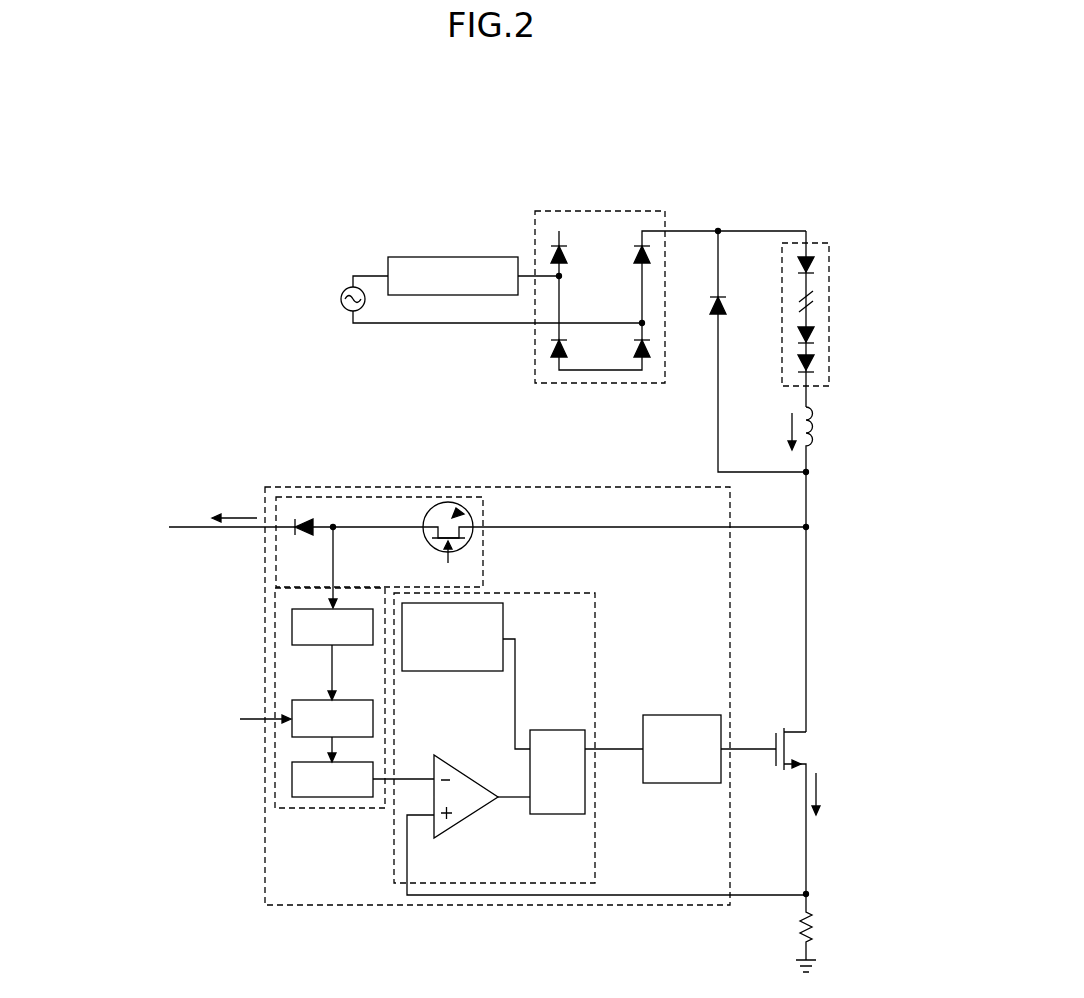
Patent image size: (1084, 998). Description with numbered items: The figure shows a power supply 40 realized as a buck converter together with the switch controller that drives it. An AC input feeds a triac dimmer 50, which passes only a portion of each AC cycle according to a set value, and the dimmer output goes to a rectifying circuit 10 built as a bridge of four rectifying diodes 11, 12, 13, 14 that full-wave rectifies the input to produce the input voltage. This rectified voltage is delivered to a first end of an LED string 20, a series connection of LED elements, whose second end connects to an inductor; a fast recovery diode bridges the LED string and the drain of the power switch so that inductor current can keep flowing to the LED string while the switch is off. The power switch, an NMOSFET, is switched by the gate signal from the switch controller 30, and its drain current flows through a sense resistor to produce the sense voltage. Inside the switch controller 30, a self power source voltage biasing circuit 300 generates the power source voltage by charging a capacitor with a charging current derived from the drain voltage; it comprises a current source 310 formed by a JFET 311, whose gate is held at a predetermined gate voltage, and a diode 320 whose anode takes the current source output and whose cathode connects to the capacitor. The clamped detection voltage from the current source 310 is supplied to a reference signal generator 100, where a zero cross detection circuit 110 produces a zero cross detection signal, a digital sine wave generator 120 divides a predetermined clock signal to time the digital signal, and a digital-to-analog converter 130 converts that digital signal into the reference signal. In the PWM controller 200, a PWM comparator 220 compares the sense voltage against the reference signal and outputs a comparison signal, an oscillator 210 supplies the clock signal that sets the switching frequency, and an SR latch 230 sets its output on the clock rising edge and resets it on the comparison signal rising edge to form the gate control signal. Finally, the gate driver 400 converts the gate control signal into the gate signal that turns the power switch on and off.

The power supply 40 is at (292, 157).
The rectifying circuit 10 is at (572, 211).
The rectifying diode 11 is at (569, 253).
The rectifying diode 12 is at (652, 253).
The rectifying diode 13 is at (569, 349).
The rectifying diode 14 is at (652, 349).
The LED string 20 is at (817, 243).
The switch controller 30 is at (442, 907).
The triac dimmer 50 is at (452, 257).
The reference signal generator 100 is at (353, 810).
The zero cross detection circuit 110 is at (292, 641).
The digital sine wave generator 120 is at (307, 700).
The digital-to-analog converter 130 is at (292, 781).
The PWM controller 200 is at (597, 628).
The oscillator 210 is at (505, 612).
The PWM comparator 220 is at (457, 757).
The SR latch 230 is at (587, 800).
The self power source voltage biasing circuit 300 is at (608, 487).
The current source 310 is at (430, 502).
The junction gate field-effect transistor 311 is at (458, 512).
The diode 320 is at (303, 520).
The gate driver 400 is at (695, 715).